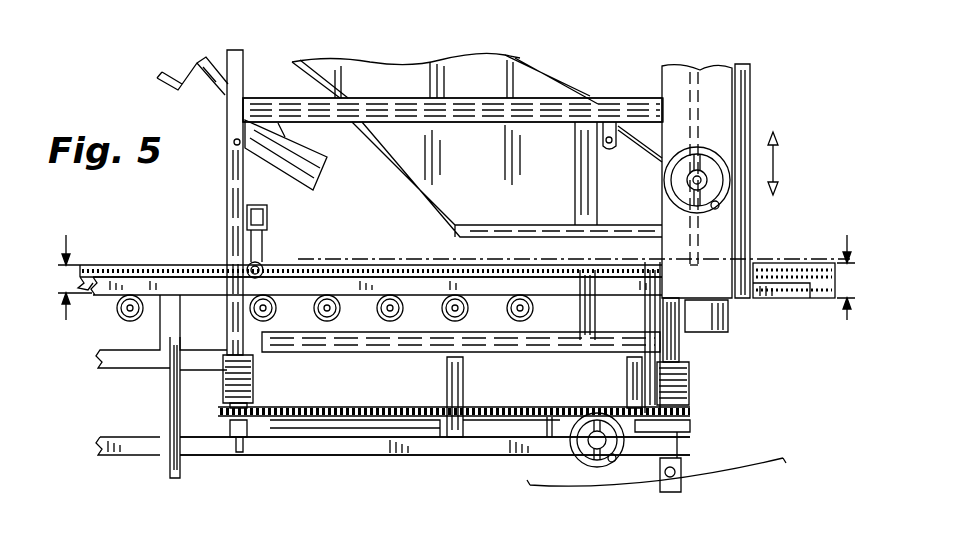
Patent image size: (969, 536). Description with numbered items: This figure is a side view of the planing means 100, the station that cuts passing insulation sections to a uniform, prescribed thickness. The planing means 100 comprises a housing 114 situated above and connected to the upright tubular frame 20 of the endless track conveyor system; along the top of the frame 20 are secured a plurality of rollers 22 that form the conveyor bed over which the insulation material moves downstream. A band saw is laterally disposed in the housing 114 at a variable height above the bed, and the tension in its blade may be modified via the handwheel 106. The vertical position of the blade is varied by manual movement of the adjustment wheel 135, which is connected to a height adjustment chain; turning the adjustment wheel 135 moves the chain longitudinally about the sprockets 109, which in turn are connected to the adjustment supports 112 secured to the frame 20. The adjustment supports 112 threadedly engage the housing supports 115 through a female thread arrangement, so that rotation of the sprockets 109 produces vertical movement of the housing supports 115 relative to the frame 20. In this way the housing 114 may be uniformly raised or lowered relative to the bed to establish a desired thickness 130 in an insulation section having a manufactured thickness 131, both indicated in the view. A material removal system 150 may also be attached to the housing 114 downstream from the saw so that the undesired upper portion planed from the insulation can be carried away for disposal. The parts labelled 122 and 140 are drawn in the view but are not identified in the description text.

The upright tubular frame 20 is at (410, 460).
The rollers 22 is at (523, 322).
The planing means 100 is at (605, 80).
The handwheel 106 is at (713, 152).
The sprockets 109 is at (232, 418).
The adjustment supports 112 is at (690, 382).
The housing 114 is at (748, 67).
The housing supports 115 is at (680, 340).
The support column 122 is at (700, 75).
The desired thickness 130 is at (78, 278).
The manufactured thickness 131 is at (858, 288).
The adjustment wheel 135 is at (598, 470).
The crank handle 140 is at (208, 88).
The material removal system 150 is at (503, 65).